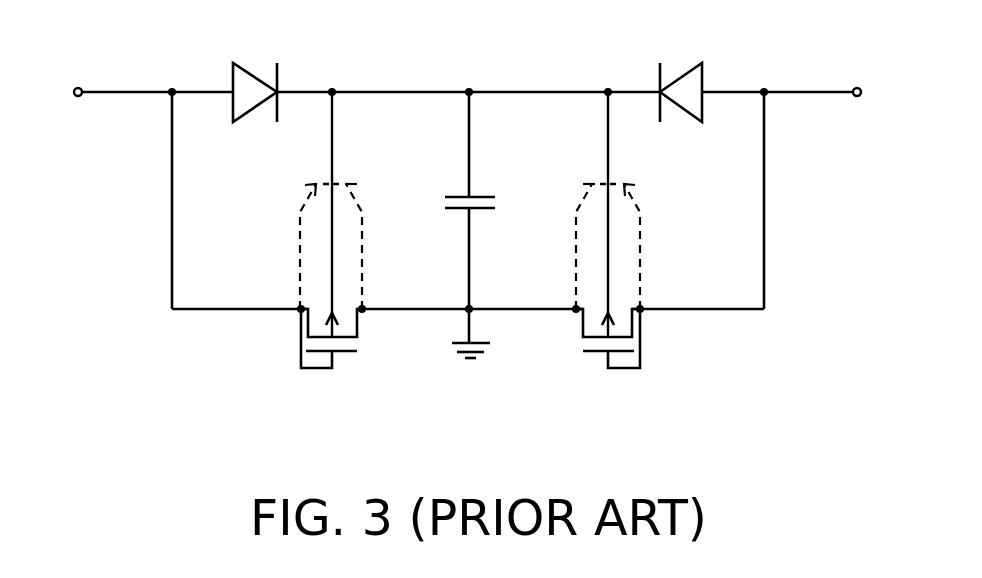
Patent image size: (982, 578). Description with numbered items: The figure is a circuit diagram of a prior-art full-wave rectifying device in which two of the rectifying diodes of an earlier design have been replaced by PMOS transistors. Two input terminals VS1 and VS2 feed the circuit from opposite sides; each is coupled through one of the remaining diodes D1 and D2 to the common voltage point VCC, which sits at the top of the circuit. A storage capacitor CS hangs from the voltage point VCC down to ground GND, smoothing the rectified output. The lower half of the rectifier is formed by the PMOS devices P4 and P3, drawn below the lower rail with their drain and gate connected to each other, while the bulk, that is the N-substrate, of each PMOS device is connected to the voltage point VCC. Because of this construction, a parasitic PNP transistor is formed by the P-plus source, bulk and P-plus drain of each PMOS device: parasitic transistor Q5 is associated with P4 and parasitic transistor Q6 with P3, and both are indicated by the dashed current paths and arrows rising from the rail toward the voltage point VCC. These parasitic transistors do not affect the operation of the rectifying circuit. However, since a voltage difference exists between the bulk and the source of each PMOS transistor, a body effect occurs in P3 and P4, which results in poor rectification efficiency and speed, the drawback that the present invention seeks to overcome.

The first supply voltage terminal VS1 is at (52, 91).
The second supply voltage terminal VS2 is at (884, 91).
The voltage point Vcc VCC is at (469, 62).
The first diode D1 is at (255, 70).
The second diode D2 is at (681, 71).
The storage capacitor CS is at (461, 200).
The ground GND is at (470, 357).
The parasitic PNP transistor Q5 is at (340, 214).
The parasitic PNP transistor Q6 is at (601, 214).
The PMOS device P4 is at (340, 355).
The PMOS device P3 is at (601, 355).